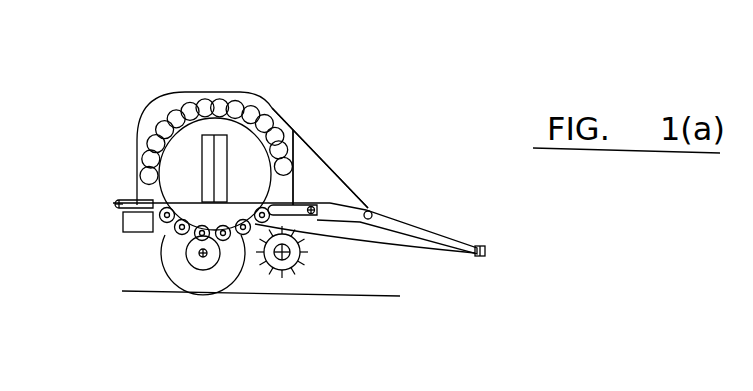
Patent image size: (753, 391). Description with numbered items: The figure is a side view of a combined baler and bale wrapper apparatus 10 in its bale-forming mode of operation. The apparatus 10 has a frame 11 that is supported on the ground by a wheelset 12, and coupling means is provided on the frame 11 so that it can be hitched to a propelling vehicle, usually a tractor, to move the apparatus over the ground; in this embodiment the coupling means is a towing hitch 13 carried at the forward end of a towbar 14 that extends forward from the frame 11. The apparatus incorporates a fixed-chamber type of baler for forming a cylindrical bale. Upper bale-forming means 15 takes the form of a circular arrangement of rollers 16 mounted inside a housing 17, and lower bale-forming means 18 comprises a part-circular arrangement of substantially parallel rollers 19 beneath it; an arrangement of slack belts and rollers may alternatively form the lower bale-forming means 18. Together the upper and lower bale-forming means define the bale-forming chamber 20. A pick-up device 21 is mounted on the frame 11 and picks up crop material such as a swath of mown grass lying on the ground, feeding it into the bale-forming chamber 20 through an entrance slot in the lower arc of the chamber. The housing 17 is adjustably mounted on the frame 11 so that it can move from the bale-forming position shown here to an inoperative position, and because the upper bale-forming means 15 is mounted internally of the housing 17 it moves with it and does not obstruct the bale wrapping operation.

The combined baler and bale wrapper apparatus 10 is at (327, 140).
The frame 11 is at (377, 237).
The wheelset 12 is at (190, 278).
The towing hitch 13 is at (487, 248).
The towbar 14 is at (412, 238).
The upper bale-forming means 15 is at (212, 90).
The rollers 16 is at (247, 108).
The housing 17 is at (280, 117).
The lower bale-forming means 18 is at (160, 233).
The rollers 19 is at (224, 238).
The bale-forming chamber 20 is at (180, 137).
The pick-up device 21 is at (288, 268).